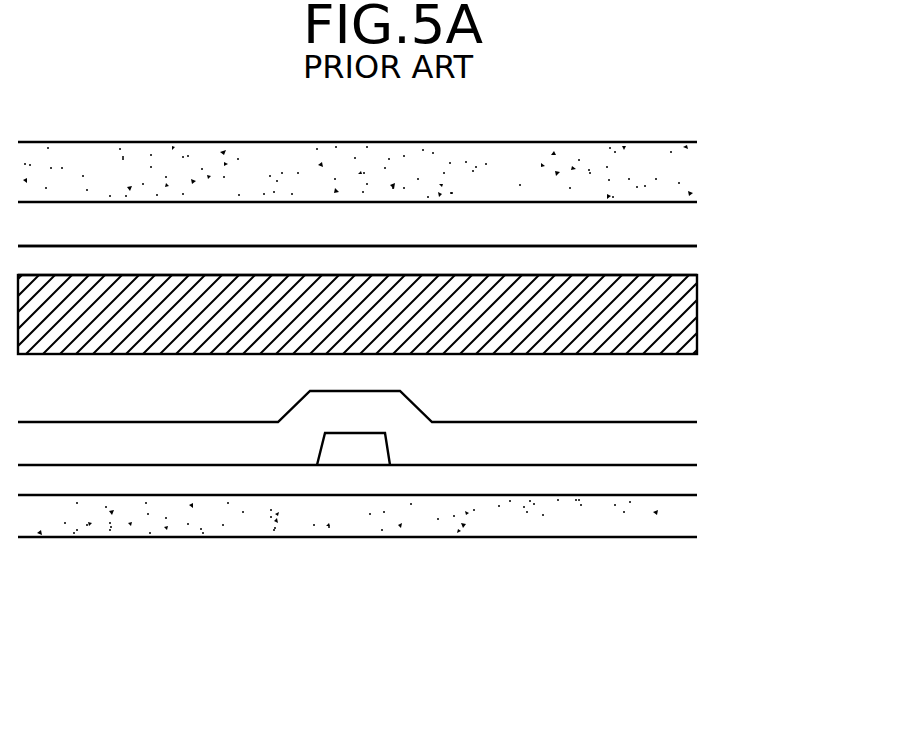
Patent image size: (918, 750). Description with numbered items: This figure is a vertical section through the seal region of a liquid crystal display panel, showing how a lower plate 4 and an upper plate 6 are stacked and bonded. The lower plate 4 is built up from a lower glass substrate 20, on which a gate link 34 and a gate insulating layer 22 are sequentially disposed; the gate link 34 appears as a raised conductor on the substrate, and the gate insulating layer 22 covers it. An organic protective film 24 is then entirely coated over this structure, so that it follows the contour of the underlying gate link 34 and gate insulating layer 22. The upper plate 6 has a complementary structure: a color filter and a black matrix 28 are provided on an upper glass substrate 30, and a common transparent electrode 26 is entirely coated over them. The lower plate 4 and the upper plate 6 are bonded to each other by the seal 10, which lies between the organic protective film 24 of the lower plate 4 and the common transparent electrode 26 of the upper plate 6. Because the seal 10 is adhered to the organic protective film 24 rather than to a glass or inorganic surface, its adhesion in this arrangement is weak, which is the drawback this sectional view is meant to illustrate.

The upper plate 6 is at (778, 148).
The upper glass substrate 30 is at (686, 172).
The black matrix 28 is at (686, 228).
The common transparent electrode 26 is at (686, 268).
The seal 10 is at (686, 322).
The lower plate 4 is at (778, 375).
The organic protective film 24 is at (686, 400).
The gate insulating layer 22 is at (686, 478).
The lower glass substrate 20 is at (686, 520).
The gate link 34 is at (350, 453).